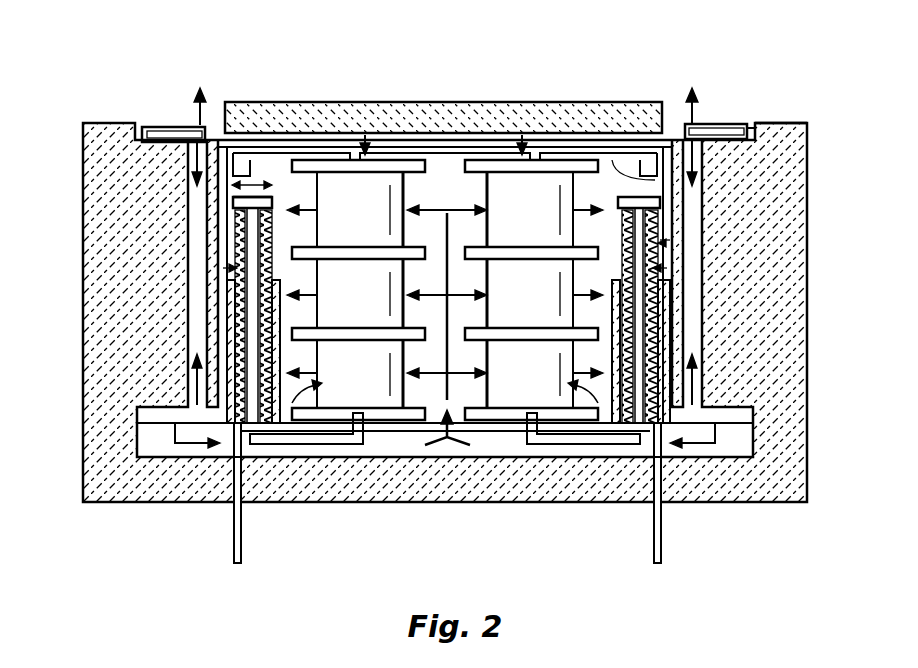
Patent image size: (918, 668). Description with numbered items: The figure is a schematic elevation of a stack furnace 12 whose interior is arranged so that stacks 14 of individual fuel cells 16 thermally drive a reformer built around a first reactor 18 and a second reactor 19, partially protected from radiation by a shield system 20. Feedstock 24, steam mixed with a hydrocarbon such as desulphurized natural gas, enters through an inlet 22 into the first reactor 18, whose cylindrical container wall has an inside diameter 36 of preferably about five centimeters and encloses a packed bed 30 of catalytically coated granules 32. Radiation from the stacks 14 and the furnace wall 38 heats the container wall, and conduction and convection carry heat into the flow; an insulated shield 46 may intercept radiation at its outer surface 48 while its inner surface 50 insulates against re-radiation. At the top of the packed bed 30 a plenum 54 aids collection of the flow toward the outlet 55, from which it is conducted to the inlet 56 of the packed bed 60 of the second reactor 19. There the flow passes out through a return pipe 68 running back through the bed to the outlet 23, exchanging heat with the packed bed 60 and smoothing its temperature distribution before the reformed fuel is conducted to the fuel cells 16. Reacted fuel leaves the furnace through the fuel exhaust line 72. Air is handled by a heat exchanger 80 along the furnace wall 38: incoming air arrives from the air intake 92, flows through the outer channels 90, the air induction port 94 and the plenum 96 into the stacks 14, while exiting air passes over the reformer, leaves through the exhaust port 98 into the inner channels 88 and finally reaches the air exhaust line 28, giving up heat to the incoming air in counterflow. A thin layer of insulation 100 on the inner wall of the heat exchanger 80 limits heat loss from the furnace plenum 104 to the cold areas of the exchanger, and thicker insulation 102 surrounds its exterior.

The furnace 12 is at (344, 100).
The stack 14 is at (366, 136).
The fuel cells 16 is at (360, 277).
The first reactor 18 is at (238, 270).
The second reactor 19 is at (630, 250).
The shield system 20 is at (340, 422).
The inlet 22 is at (241, 545).
The outlet 23 is at (658, 545).
The feedstock 24 is at (232, 480).
The air exhaust line 28 is at (690, 122).
The packed bed 30 is at (245, 203).
The granules 32 is at (230, 250).
The inside diameter 36 is at (233, 168).
The furnace wall 38 is at (612, 160).
The insulated shield 46 is at (228, 360).
The outer surface 48 is at (292, 445).
The inner surface 50 is at (262, 428).
The plenum 54 is at (165, 130).
The outlet 55 is at (252, 160).
The inlet 56 is at (640, 428).
The packed bed 60 is at (670, 243).
The return pipe 68 is at (598, 445).
The fuel exhaust line 72 is at (300, 152).
The heat exchanger 80 is at (172, 300).
The channels 88 is at (735, 124).
The channels 90 is at (197, 125).
The air intake 92 is at (748, 132).
The air induction port 94 is at (165, 445).
The plenum 96 is at (510, 447).
The exhaust port 98 is at (215, 428).
The insulation 100 is at (660, 232).
The insulation 102 is at (800, 125).
The plenum 104 is at (302, 392).